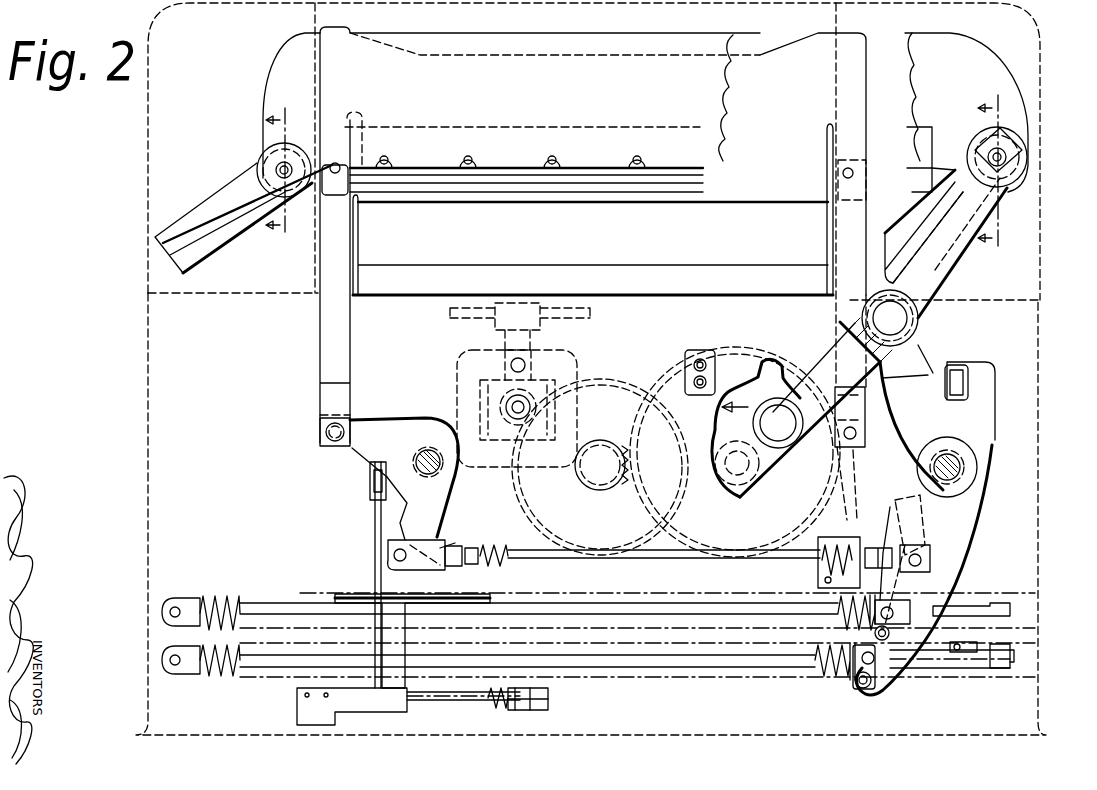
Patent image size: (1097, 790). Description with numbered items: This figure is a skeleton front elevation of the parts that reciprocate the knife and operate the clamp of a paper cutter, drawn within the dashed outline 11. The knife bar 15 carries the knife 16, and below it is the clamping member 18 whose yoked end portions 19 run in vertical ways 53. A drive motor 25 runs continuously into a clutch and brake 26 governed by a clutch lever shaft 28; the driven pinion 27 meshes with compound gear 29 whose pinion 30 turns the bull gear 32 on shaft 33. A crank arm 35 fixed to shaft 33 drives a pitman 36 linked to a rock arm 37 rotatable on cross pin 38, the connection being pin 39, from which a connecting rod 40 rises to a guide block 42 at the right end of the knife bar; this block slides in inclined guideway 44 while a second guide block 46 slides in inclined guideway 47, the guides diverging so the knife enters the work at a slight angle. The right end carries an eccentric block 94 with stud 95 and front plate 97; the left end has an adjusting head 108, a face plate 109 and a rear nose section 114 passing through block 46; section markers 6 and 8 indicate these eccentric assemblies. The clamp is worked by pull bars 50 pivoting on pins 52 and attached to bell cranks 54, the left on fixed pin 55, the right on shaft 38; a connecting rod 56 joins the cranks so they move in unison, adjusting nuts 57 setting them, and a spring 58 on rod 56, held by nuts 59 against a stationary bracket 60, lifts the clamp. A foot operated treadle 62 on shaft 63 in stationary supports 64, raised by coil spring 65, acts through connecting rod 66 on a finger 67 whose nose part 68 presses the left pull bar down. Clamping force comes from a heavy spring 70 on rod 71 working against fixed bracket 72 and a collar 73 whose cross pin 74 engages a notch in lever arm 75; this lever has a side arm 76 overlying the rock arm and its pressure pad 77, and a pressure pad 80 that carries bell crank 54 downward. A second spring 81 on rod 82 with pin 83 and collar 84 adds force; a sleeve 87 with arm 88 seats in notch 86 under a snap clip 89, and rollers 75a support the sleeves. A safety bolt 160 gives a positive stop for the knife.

The section line 6- 6 is at (995, 169).
The section line 8- 8 is at (283, 166).
The housing 11 is at (148, 125).
The knife bar 15 is at (288, 40).
The knife 16 is at (556, 183).
The clamping member 18 is at (350, 30).
The yoked end portions 19 is at (332, 232).
The drive motor 25 is at (457, 367).
The clutch and brake 26 is at (480, 395).
The pinion 27 is at (508, 422).
The clutch lever shaft 28 is at (548, 325).
The compound gear 29 is at (585, 380).
The pinion 30 is at (590, 442).
The bull gear 32 is at (682, 362).
The shaft 33 is at (740, 485).
The crank arm 35 is at (768, 372).
The pitman 36 is at (823, 365).
The rock arm 37 is at (925, 372).
The cross pin 38 is at (975, 467).
The pin 39 is at (905, 318).
The connecting rod 40 is at (948, 262).
The guide block 42 is at (1022, 155).
The inclined guideway 44 is at (895, 240).
The second guide block 46 is at (246, 190).
The inclined guideway 47 is at (208, 215).
The pull bars 50 is at (320, 330).
The pins 52 is at (343, 196).
The vertical ways 53 is at (416, 555).
The bell cranks 54 is at (405, 418).
The fixed pin 55 is at (432, 448).
The connecting rod 56 is at (570, 552).
The adjusting nuts 57 is at (443, 548).
The spring 58 is at (485, 552).
The nuts 59 is at (478, 545).
The stationary bracket 60 is at (835, 538).
The foot operated treadle 62 is at (360, 595).
The shaft 63 is at (447, 704).
The stationary supports 64 is at (297, 712).
The coil spring 65 is at (500, 709).
The connecting rod 66 is at (372, 540).
The finger 67 is at (366, 452).
The nose part 68 is at (320, 432).
The heavy spring 70 is at (220, 596).
The rod 71 is at (300, 582).
The fixed bracket 72 is at (180, 598).
The collar 73 is at (890, 600).
The cross pin 74 is at (895, 612).
The lever arm 75 is at (950, 560).
The rollers 75a is at (865, 695).
The side arm 76 is at (990, 368).
The pressure pad 77 is at (960, 365).
The pressure pad 80 is at (925, 518).
The second spring 81 is at (228, 676).
The rod 82 is at (640, 668).
The pin 83 is at (870, 690).
The collar 84 is at (852, 672).
The notch 86 is at (985, 606).
The sleeve 87 is at (948, 670).
The arm 88 is at (960, 642).
The snap clip 89 is at (995, 672).
The eccentric block 94 is at (1022, 190).
The stud 95 is at (1010, 170).
The front plate 97 is at (1020, 140).
The adjusting head 108 is at (275, 166).
The face plate 109 is at (272, 150).
The rear nose section 114 is at (320, 148).
The safety bolt 160 is at (715, 334).